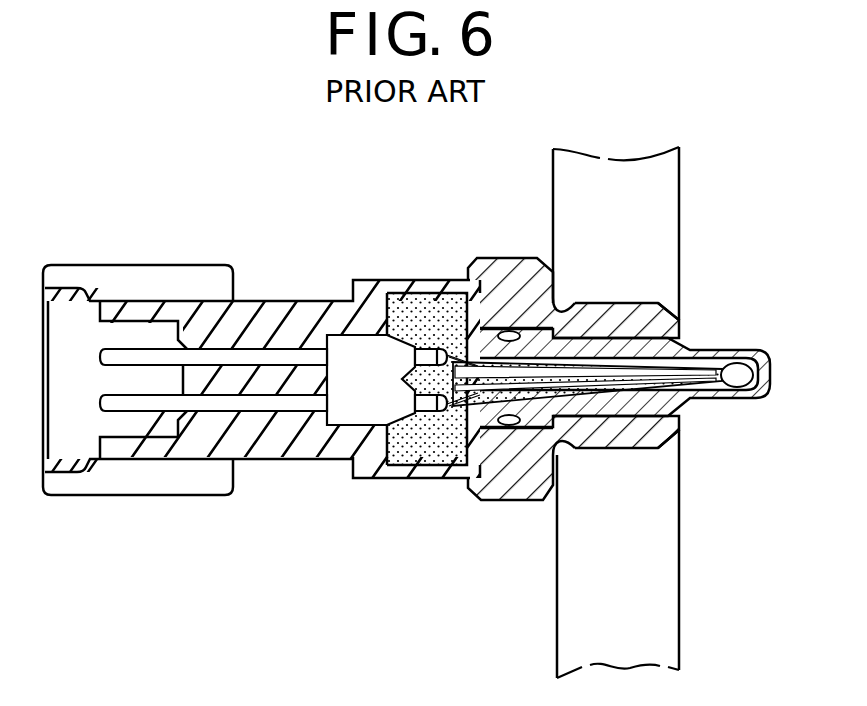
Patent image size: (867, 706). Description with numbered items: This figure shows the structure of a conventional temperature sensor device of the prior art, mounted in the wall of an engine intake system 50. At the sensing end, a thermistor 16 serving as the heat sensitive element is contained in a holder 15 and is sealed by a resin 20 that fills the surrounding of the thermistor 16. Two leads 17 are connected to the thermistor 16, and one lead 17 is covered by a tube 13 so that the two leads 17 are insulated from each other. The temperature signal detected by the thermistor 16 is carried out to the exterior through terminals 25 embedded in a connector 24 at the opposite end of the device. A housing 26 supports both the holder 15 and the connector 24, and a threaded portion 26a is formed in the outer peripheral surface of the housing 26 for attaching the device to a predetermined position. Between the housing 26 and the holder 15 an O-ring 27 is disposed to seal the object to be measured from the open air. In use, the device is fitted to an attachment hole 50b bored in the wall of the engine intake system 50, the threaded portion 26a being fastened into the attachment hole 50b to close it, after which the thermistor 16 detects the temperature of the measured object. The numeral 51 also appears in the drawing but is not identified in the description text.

The tube 13 is at (688, 370).
The holder 15 is at (747, 352).
The thermistor 16 is at (740, 382).
The leads 17 is at (462, 463).
The resin 20 is at (667, 447).
The connector 24 is at (92, 481).
The terminals 25 is at (162, 357).
The housing 26 is at (580, 437).
The threaded portion 26a is at (602, 450).
The O-ring 27 is at (510, 426).
The engine intake system 50 is at (553, 225).
The attachment hole 50b is at (682, 308).
The seal 51 is at (682, 340).